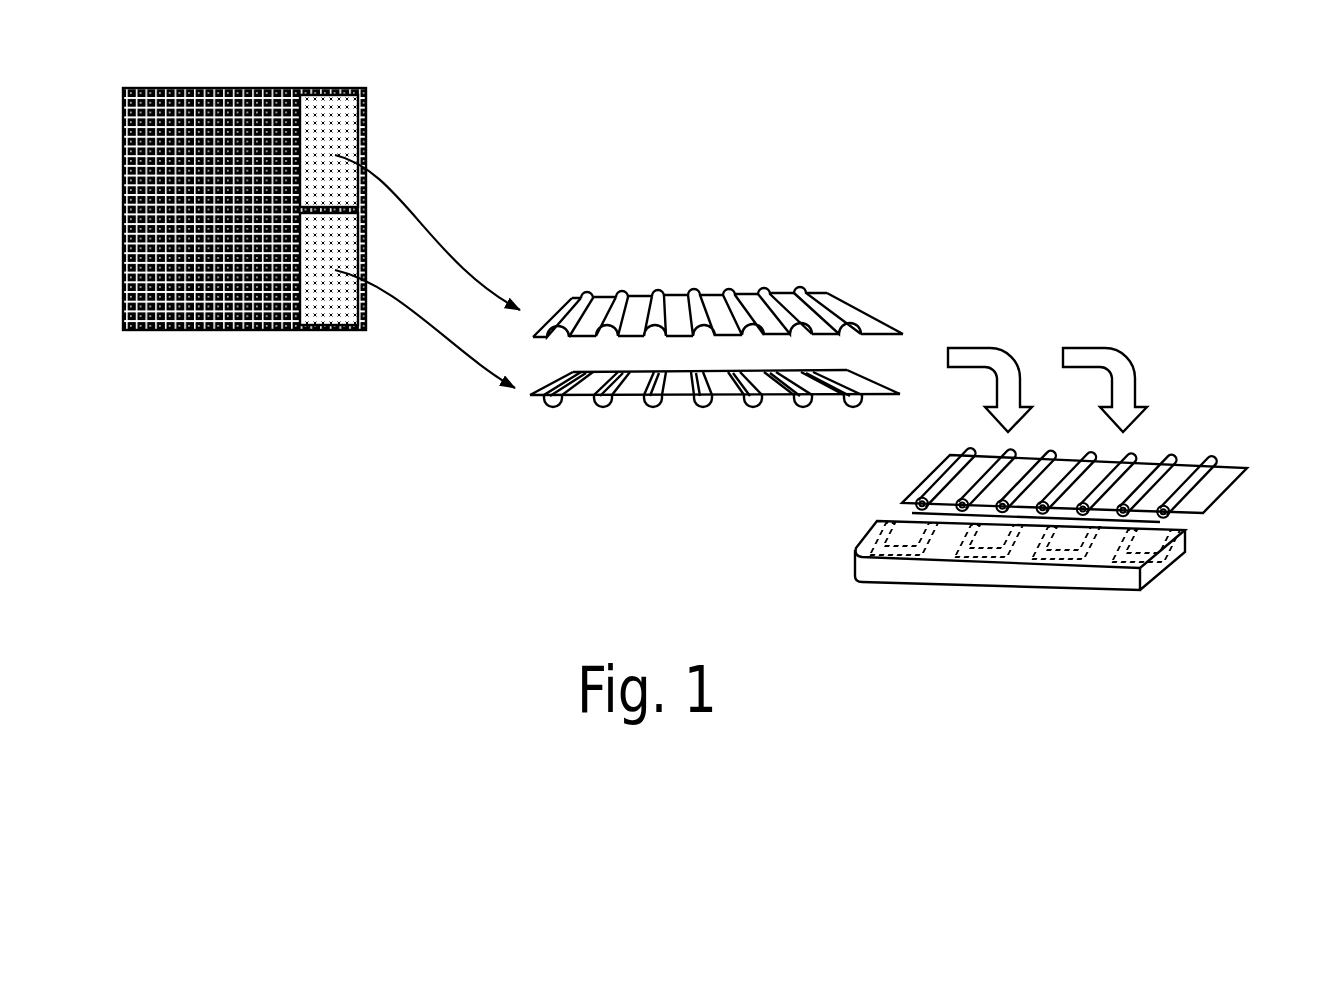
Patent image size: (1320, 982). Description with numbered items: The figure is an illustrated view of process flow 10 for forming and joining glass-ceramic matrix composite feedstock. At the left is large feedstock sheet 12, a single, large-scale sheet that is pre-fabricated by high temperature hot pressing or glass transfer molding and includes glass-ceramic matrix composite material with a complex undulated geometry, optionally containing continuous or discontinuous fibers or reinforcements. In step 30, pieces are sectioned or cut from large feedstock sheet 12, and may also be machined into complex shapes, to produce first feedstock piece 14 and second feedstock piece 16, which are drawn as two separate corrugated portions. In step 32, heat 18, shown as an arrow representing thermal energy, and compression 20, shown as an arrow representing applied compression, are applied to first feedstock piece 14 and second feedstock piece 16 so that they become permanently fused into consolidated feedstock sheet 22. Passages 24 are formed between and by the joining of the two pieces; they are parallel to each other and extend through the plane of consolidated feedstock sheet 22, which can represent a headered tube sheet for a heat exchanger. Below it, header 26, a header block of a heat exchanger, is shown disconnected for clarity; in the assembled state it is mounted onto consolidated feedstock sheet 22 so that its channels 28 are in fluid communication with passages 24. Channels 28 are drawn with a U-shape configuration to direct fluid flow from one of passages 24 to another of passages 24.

The process flow 10 is at (897, 156).
The large feedstock sheet 12 is at (238, 331).
The first feedstock piece 14 is at (711, 292).
The second feedstock piece 16 is at (684, 397).
The heat 18 is at (971, 348).
The compression 20 is at (1088, 348).
The consolidated feedstock sheet 22 is at (1172, 450).
The passages 24 is at (916, 514).
The header 26 is at (860, 540).
The channels 28 is at (1133, 563).
The step 30 is at (444, 245).
The step 32 is at (962, 380).